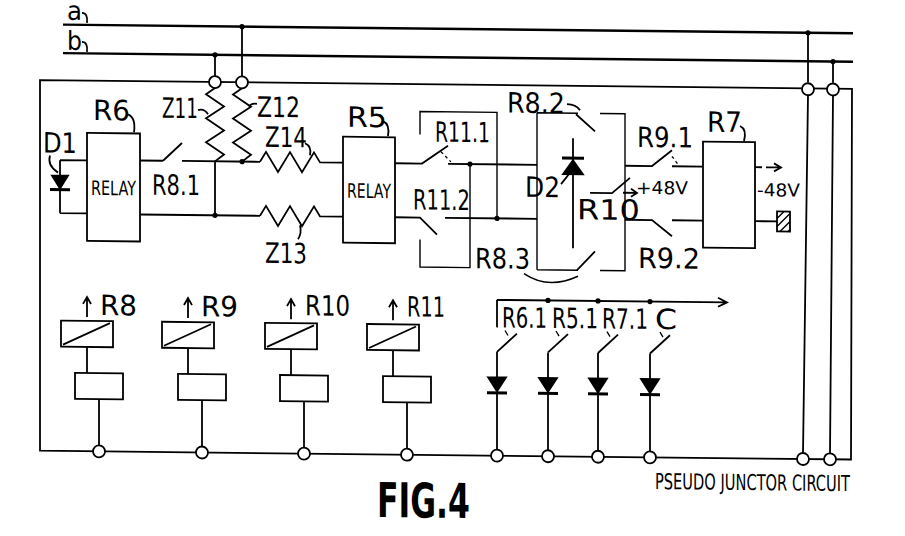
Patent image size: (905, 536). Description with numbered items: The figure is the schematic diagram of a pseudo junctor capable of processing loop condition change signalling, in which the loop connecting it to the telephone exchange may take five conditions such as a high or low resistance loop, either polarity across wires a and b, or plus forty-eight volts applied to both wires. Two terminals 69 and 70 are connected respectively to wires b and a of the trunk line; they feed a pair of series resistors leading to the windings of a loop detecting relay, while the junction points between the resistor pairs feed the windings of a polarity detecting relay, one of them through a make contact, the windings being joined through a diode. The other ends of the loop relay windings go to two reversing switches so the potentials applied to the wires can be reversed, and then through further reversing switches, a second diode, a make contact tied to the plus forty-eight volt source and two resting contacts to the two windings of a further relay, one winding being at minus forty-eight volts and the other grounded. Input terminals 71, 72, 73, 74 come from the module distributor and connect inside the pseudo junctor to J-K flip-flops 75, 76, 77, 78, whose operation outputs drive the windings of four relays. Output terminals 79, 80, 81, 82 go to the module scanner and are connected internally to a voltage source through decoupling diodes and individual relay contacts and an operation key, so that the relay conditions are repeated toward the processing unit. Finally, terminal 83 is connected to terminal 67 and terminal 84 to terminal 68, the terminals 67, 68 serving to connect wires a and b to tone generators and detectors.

The terminal 67 is at (828, 445).
The terminal 68 is at (800, 446).
The terminal 69 is at (212, 76).
The terminal 70 is at (251, 72).
The input terminal 71 is at (95, 447).
The input terminal 72 is at (197, 447).
The input terminal 73 is at (298, 446).
The input terminal 74 is at (398, 446).
The J-K flip-flop 75 is at (131, 370).
The J-K flip-flop 76 is at (233, 370).
The J-K flip-flop 77 is at (335, 368).
The J-K flip-flop 78 is at (440, 369).
The output terminal 79 is at (503, 441).
The output terminal 80 is at (554, 441).
The output terminal 81 is at (604, 441).
The output terminal 82 is at (656, 441).
The terminal 83 is at (831, 87).
The terminal 84 is at (806, 87).